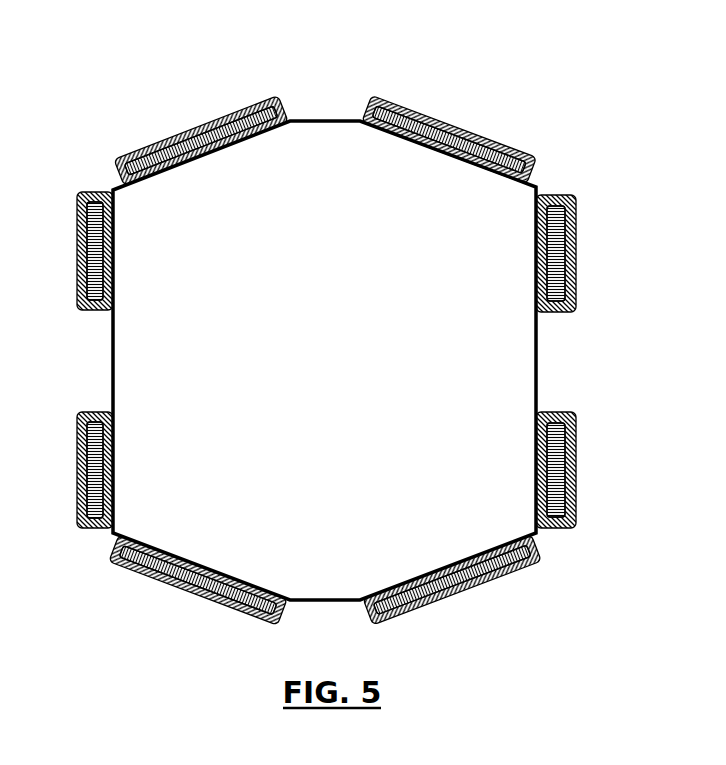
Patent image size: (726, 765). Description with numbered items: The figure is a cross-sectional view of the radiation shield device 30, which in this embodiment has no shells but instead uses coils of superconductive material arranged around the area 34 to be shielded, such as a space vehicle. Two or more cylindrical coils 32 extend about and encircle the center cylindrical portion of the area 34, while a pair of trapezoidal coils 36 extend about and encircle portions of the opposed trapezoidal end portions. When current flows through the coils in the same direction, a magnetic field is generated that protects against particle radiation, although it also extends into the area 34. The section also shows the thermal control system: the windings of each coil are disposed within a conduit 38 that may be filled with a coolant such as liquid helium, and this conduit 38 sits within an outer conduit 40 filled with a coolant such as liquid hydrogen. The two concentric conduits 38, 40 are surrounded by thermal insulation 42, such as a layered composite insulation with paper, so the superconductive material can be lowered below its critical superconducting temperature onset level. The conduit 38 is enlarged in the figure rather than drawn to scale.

The radiation shield device 30 is at (384, 321).
The cylindrical coils 32 is at (577, 281).
The area to be shielded 34 is at (538, 363).
The trapezoidal coils 36 is at (387, 321).
The conduit 38 is at (437, 117).
The outer conduit 40 is at (500, 138).
The thermal insulation 42 is at (530, 167).